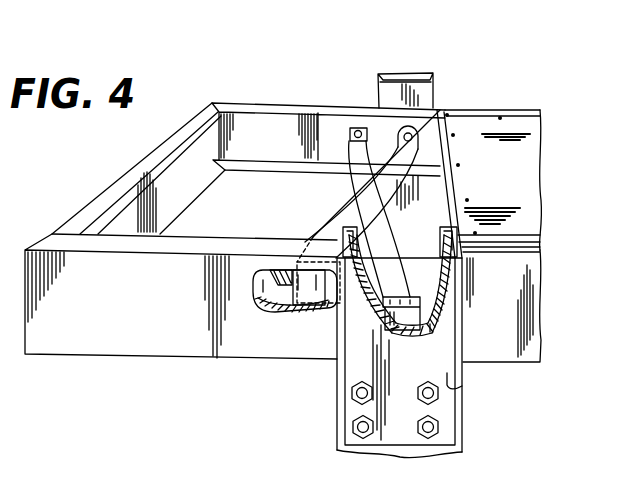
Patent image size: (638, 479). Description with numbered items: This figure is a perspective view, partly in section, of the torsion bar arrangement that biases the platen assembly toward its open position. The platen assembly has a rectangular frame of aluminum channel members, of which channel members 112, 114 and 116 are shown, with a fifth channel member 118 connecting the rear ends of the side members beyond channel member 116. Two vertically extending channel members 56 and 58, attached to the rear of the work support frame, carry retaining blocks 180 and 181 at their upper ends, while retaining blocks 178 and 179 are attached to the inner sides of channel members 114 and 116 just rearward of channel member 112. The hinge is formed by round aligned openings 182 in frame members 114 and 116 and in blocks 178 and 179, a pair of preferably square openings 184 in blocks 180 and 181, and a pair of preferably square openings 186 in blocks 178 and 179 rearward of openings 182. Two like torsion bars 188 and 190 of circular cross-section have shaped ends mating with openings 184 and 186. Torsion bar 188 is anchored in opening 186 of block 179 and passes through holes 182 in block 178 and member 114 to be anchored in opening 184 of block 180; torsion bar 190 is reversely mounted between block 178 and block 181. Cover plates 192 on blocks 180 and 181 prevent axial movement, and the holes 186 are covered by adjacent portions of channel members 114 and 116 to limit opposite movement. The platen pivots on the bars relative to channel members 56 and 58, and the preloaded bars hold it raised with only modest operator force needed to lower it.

The channel member 56 is at (462, 429).
The channel member 58 is at (436, 108).
The channel member 112 is at (441, 190).
The channel member 114 is at (120, 329).
The channel member 116 is at (258, 132).
The fifth channel member 118 is at (120, 178).
The retaining block 178 is at (277, 300).
The retaining block 179 is at (332, 164).
The retaining block 180 is at (473, 231).
The retaining block 181 is at (406, 73).
The round aligned openings 182 is at (412, 133).
The non-circular openings 184 is at (423, 314).
The non-circular openings 186 is at (352, 128).
The torsion bar 188 is at (360, 172).
The torsion bar 190 is at (409, 150).
The cover plate 192 is at (402, 68).